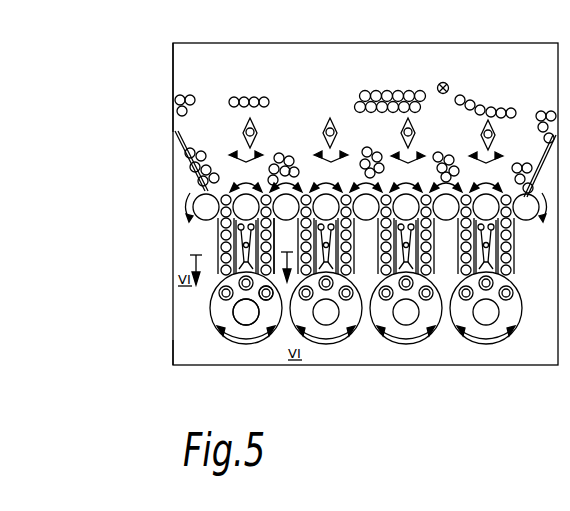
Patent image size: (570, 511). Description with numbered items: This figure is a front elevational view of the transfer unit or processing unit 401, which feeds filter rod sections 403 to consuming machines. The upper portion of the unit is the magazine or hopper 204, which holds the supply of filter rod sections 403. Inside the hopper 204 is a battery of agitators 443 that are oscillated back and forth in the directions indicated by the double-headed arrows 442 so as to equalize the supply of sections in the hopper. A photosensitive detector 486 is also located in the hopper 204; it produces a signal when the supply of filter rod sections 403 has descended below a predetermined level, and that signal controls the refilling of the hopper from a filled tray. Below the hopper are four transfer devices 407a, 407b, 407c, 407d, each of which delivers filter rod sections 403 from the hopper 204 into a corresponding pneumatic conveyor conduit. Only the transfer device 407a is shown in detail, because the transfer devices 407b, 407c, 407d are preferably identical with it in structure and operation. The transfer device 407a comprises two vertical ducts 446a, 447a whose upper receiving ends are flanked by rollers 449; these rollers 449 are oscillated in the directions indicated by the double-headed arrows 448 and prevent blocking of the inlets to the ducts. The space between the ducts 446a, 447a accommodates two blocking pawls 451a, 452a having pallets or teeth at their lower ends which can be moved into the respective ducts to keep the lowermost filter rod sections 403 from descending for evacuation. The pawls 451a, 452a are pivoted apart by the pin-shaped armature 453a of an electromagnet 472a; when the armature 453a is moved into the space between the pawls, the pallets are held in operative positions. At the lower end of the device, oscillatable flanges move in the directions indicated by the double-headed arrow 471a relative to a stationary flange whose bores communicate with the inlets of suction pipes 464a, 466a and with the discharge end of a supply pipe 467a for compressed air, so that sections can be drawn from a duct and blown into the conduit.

The processing unit 401 is at (396, 31).
The magazine or hopper 204 is at (173, 68).
The filter rod sections 403 is at (262, 96).
The photosensitive detector 486 is at (449, 85).
The agitators 443 is at (256, 121).
The double-headed arrows 442 is at (330, 145).
The double-headed arrows 448 is at (369, 182).
The rollers 449 is at (294, 213).
The pin-shaped armature 453a is at (218, 232).
The vertical duct 446a is at (243, 236).
The electromagnet 472a is at (236, 242).
The blocking pawl 451a is at (222, 280).
The blocking pawl 452a is at (234, 292).
The suction pipe 464a is at (173, 358).
The double-headed arrow 471a is at (242, 340).
The supply pipe for compressed air 467a is at (241, 346).
The suction pipe 466a is at (281, 325).
The vertical duct 447a is at (276, 335).
The transfer device 407a is at (201, 309).
The transfer device 407b is at (333, 310).
The transfer device 407c is at (406, 310).
The transfer device 407d is at (486, 310).